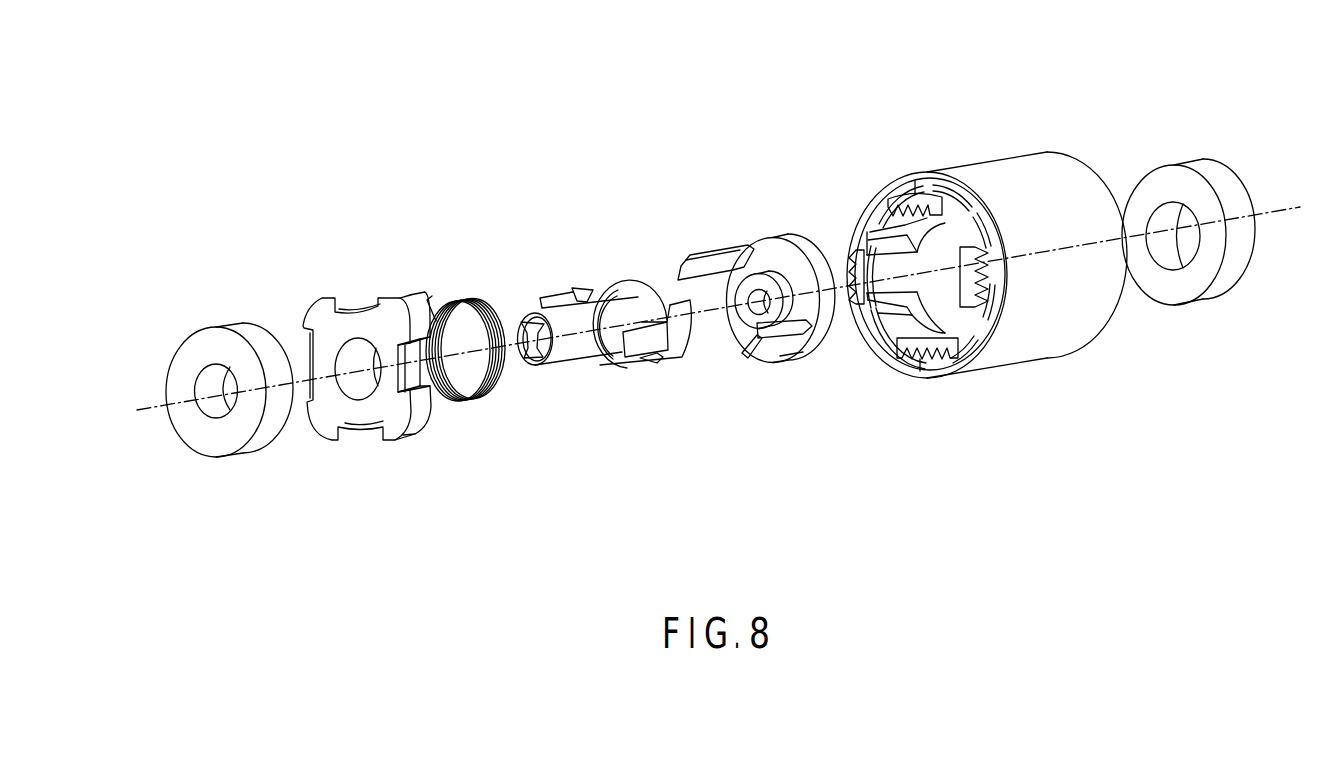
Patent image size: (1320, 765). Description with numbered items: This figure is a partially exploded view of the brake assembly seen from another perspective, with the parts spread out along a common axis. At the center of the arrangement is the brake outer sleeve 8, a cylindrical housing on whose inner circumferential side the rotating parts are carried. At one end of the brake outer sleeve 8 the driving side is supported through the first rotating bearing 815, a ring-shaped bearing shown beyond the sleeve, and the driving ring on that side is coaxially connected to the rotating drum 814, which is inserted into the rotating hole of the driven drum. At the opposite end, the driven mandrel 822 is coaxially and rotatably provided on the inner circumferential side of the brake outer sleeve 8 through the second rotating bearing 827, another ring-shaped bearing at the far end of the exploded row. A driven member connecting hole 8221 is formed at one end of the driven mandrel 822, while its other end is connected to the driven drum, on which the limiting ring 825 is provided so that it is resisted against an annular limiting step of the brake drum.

The brake outer sleeve 8 is at (1028, 215).
The rotating drum 814 is at (768, 273).
The first rotating bearing 815 is at (1202, 170).
The driven mandrel 822 is at (525, 283).
The driven member connecting hole 8221 is at (478, 290).
The limiting ring 825 is at (623, 288).
The second rotating bearing 827 is at (222, 355).